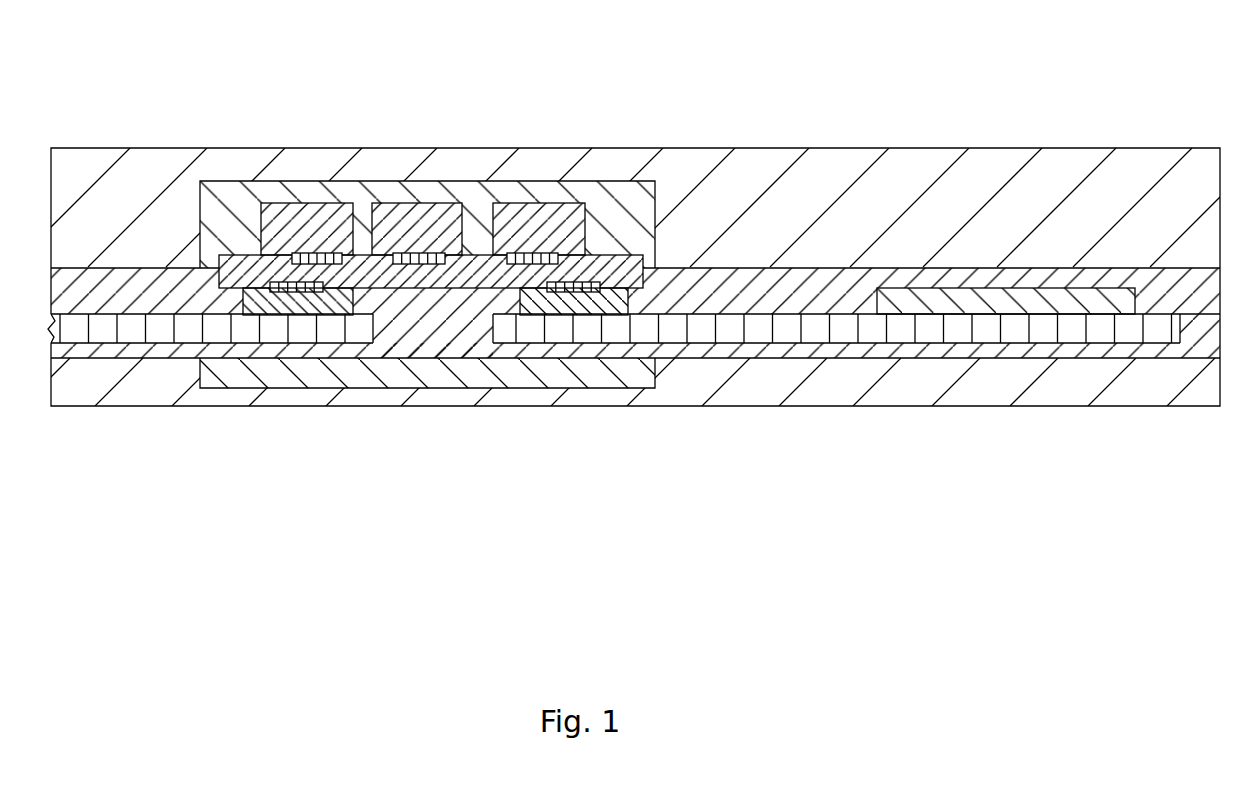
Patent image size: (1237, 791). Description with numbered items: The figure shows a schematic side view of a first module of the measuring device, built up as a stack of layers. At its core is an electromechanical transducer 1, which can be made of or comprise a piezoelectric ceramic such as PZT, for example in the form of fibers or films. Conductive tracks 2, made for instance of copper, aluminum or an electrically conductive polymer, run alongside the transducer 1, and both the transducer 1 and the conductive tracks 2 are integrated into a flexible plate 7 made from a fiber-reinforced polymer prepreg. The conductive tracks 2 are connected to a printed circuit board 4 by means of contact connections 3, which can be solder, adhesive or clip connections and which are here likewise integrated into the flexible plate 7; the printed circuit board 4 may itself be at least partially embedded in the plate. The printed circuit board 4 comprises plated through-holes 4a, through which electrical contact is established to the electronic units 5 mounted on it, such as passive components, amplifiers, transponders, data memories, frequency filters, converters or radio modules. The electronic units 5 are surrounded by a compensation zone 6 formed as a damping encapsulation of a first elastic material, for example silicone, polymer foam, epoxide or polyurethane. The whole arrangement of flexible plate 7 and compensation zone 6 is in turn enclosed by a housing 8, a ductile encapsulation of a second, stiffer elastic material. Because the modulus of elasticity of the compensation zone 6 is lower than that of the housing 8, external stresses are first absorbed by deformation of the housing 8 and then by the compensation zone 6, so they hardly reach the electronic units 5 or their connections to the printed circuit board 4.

The electromechanical transducer 1 is at (1033, 298).
The conductive tracks 2 is at (163, 333).
The contact connections 3 is at (308, 307).
The printed circuit board 4 is at (362, 272).
The plated through-holes 4a is at (430, 253).
The electronic units 5 is at (313, 223).
The compensation zone 6 is at (560, 370).
The flexible plate 7 is at (778, 295).
The housing 8 is at (1032, 218).